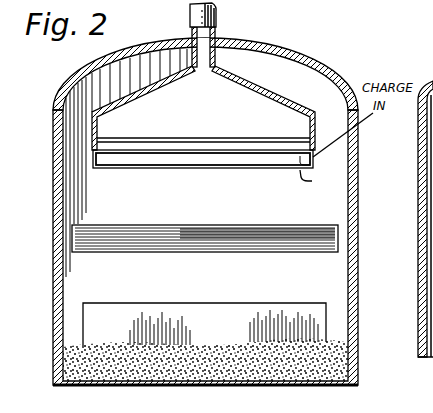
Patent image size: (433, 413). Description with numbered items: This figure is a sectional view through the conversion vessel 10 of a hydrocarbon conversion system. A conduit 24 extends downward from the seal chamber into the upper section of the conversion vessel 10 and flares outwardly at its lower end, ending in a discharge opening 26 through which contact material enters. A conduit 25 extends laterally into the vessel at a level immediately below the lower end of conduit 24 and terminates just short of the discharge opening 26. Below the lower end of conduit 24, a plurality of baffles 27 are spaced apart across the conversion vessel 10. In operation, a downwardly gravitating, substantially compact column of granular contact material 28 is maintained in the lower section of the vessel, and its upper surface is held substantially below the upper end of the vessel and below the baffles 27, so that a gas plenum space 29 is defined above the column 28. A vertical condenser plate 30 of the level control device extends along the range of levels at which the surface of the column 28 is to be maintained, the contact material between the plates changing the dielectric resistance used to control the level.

The conversion vessel 10 is at (53, 228).
The conduit 24 is at (218, 15).
The conduit 25 is at (312, 181).
The discharge opening 26 is at (313, 157).
The baffles 27 is at (327, 240).
The column of granular contact material 28 is at (355, 363).
The gas plenum space 29 is at (292, 68).
The condenser plate 30 is at (316, 327).